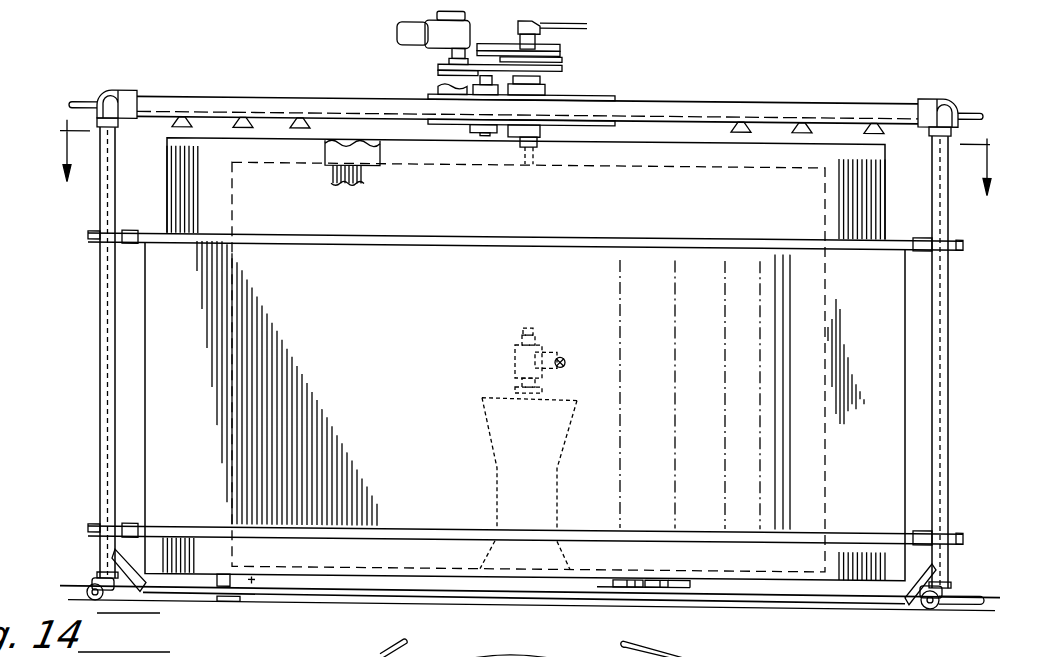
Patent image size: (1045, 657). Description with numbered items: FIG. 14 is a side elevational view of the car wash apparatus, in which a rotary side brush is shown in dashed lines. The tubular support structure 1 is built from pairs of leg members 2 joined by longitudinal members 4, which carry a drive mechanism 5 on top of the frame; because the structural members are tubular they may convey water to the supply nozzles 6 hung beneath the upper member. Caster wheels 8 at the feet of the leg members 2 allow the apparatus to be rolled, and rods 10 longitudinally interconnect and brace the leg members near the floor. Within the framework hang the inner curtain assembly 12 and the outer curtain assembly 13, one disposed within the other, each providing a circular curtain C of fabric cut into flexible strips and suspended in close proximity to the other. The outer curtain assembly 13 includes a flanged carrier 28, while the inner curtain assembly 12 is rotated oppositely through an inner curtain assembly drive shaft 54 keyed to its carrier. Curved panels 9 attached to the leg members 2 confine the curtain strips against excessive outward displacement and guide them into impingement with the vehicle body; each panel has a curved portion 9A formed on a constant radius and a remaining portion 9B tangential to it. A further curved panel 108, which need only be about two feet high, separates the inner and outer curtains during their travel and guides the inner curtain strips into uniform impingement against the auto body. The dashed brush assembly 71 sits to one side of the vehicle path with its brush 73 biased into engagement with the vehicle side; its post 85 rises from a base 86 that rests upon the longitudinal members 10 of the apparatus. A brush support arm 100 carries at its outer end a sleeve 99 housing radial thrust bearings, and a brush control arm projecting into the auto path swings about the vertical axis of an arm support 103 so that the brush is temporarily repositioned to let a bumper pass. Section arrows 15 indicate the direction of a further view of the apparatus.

The support structure 1 is at (640, 75).
The leg members 2 is at (110, 210).
The longitudinal members 4 is at (663, 101).
The drive mechanism 5 is at (398, 62).
The supply nozzles 6 is at (192, 122).
The caster wheels 8 is at (92, 580).
The curved panels 9 is at (517, 301).
The curved portion 9A is at (757, 303).
The remaining portion 9B is at (258, 302).
The rods 10 is at (327, 585).
The inner curtain assembly 12 is at (352, 155).
The outer curtain assembly 13 is at (707, 121).
The section line for FIG. 15 is at (525, 156).
The flanged carrier 28 is at (537, 134).
The inner curtain assembly drive shaft 54 is at (535, 153).
The brush assembly 71 is at (544, 449).
The brush 73 is at (563, 437).
The post 85 is at (645, 570).
The base 86 is at (687, 577).
The sleeve 99 is at (515, 355).
The brush support arm 100 is at (558, 353).
The arm support 103 is at (665, 572).
The curved panel 108 is at (408, 577).
The curtains C is at (362, 164).